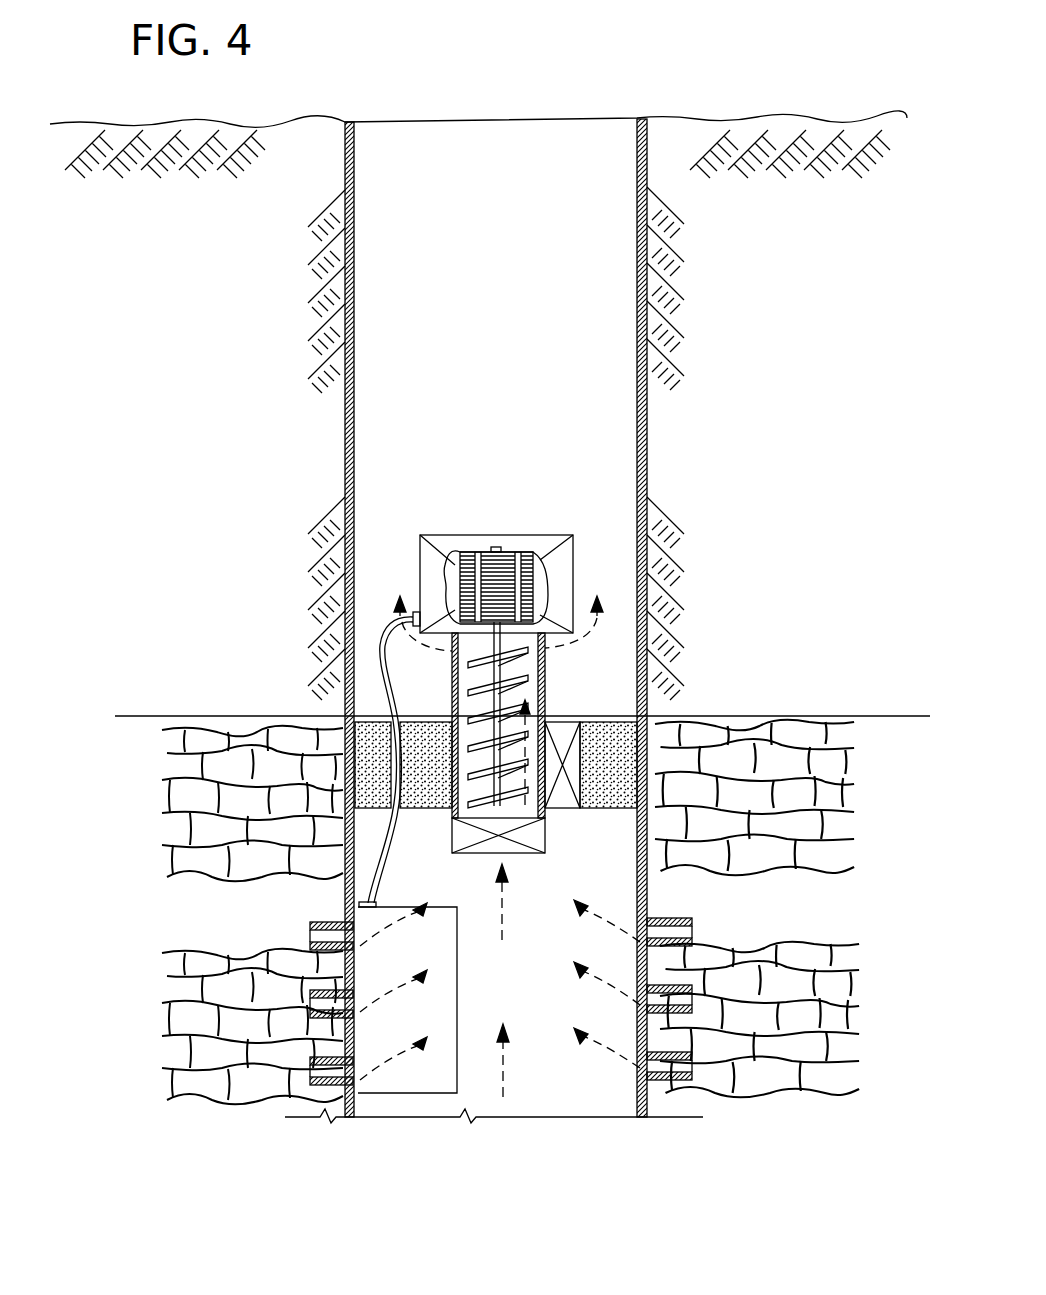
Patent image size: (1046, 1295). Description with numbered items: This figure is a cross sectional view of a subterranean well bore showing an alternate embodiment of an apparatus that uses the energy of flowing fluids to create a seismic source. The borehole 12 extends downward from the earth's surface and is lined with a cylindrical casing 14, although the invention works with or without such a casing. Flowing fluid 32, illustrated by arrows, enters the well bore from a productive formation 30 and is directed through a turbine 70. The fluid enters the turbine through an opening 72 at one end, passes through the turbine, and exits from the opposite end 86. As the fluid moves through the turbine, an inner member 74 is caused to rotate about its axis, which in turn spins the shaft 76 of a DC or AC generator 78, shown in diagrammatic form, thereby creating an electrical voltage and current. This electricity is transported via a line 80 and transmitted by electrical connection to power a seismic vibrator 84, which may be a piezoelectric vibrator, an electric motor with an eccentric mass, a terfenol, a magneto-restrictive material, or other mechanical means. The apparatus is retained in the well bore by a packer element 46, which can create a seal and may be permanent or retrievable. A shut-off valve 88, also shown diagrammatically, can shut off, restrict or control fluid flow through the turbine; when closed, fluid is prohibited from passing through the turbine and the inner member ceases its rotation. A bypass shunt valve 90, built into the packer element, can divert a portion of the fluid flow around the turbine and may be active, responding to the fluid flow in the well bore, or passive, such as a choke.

The borehole 12 is at (637, 322).
The cylindrical casing 14 is at (648, 435).
The productive formation 30 is at (747, 1098).
The flowing fluid 32 is at (506, 1045).
The packer element 46 is at (615, 768).
The turbine 70 is at (545, 676).
The opening 72 is at (508, 870).
The inner member 74 is at (456, 710).
The shaft 76 is at (548, 640).
The generator 78 is at (548, 578).
The line 80 is at (380, 625).
The seismic vibrator 84 is at (410, 1087).
The end 86 is at (494, 535).
The shut-off valve 88 is at (520, 838).
The bypass shunt valve 90 is at (567, 793).